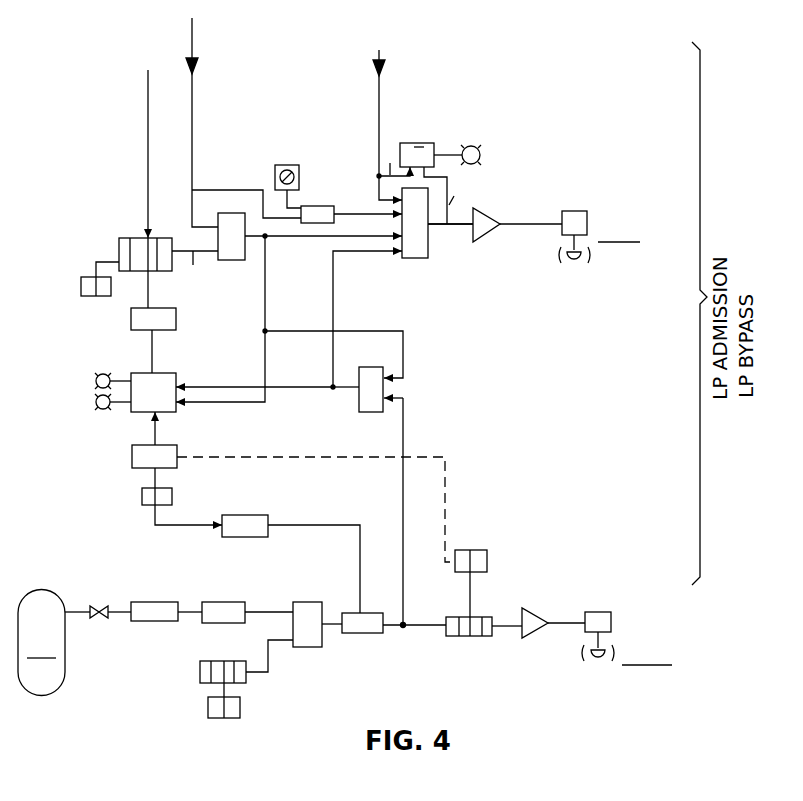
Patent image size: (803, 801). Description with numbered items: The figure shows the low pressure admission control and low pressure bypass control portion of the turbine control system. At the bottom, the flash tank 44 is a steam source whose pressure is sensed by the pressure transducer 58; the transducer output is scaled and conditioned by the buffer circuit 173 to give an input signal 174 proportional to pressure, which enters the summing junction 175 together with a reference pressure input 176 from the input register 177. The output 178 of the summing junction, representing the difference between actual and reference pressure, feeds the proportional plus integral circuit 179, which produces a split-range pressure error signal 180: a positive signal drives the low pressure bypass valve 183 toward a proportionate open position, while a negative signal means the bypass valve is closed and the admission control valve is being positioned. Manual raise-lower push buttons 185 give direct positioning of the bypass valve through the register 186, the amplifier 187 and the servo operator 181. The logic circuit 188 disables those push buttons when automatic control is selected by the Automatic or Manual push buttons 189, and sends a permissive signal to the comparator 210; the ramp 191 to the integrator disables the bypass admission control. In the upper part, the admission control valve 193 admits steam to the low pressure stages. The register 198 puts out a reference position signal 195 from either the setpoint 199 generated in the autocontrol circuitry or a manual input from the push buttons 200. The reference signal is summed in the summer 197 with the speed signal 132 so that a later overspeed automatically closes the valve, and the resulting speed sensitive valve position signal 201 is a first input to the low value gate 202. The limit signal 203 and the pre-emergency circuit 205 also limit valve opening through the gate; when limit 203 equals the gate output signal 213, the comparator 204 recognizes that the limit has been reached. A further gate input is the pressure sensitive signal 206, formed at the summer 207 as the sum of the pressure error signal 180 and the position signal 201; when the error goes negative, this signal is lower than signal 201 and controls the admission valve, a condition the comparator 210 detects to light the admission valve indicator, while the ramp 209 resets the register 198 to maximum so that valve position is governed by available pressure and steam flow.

The speed signal 132 is at (193, 92).
The limit signal 203 is at (381, 92).
The comparator 204 is at (432, 135).
The pre-emergency circuit 205 is at (327, 206).
The summer 197 is at (234, 213).
The setpoint 199 is at (146, 216).
The register 198 is at (119, 246).
The reference position signal 195 is at (203, 270).
The push buttons 200 is at (81, 283).
The ramp 209 is at (176, 322).
The comparator 210 is at (131, 413).
The logic circuit 188 is at (178, 452).
The Automatic or Manual push buttons 189 is at (174, 495).
The ramp 191 is at (258, 512).
The output of summing junction / valve position signal 201 is at (267, 275).
The pressure sensitive signal 206 is at (350, 258).
The summer 207 is at (359, 413).
The pressure error signal 180 is at (405, 440).
The low value gate 202 is at (420, 258).
The output signal 213 is at (438, 227).
The admission control valve 193 is at (578, 211).
The LPBP raise-lower push buttons 185 is at (473, 549).
The register 186 is at (458, 637).
The amplifier 187 is at (544, 610).
The servo operator 181 is at (598, 612).
The low pressure bypass valve 183 is at (611, 622).
The flash tank 44 is at (74, 643).
The pressure transducer 58 is at (161, 602).
The buffer circuit 173 is at (236, 602).
The input signal 174 is at (272, 610).
The summing junction 175 is at (302, 648).
The reference pressure input 176 is at (270, 663).
The input register 177 is at (200, 680).
The output 178 is at (332, 622).
The proportional plus integral circuit 179 is at (355, 634).